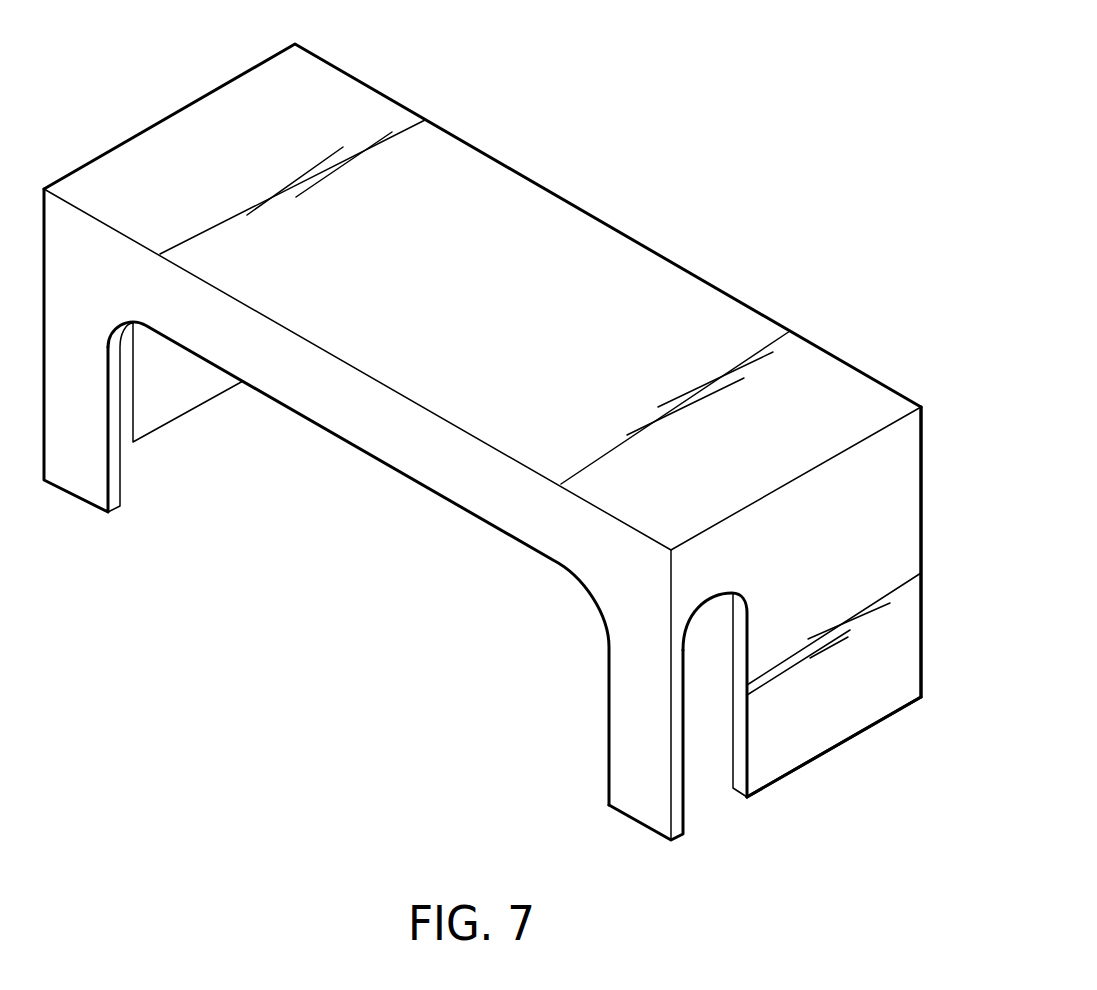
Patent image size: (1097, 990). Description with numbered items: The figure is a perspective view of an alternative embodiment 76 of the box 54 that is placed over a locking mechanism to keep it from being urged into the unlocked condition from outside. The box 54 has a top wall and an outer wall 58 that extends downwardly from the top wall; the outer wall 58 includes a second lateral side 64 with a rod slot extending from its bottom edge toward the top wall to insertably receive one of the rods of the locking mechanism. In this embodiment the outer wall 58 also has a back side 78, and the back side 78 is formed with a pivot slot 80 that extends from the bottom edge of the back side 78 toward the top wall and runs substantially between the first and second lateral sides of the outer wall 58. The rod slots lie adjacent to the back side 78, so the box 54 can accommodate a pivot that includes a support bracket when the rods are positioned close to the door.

The alternative embodiment 76 is at (633, 136).
The box 54 is at (810, 355).
The outer wall 58 is at (898, 522).
The second lateral side 64 is at (887, 685).
The back side 78 is at (83, 443).
The pivot slot 80 is at (190, 375).